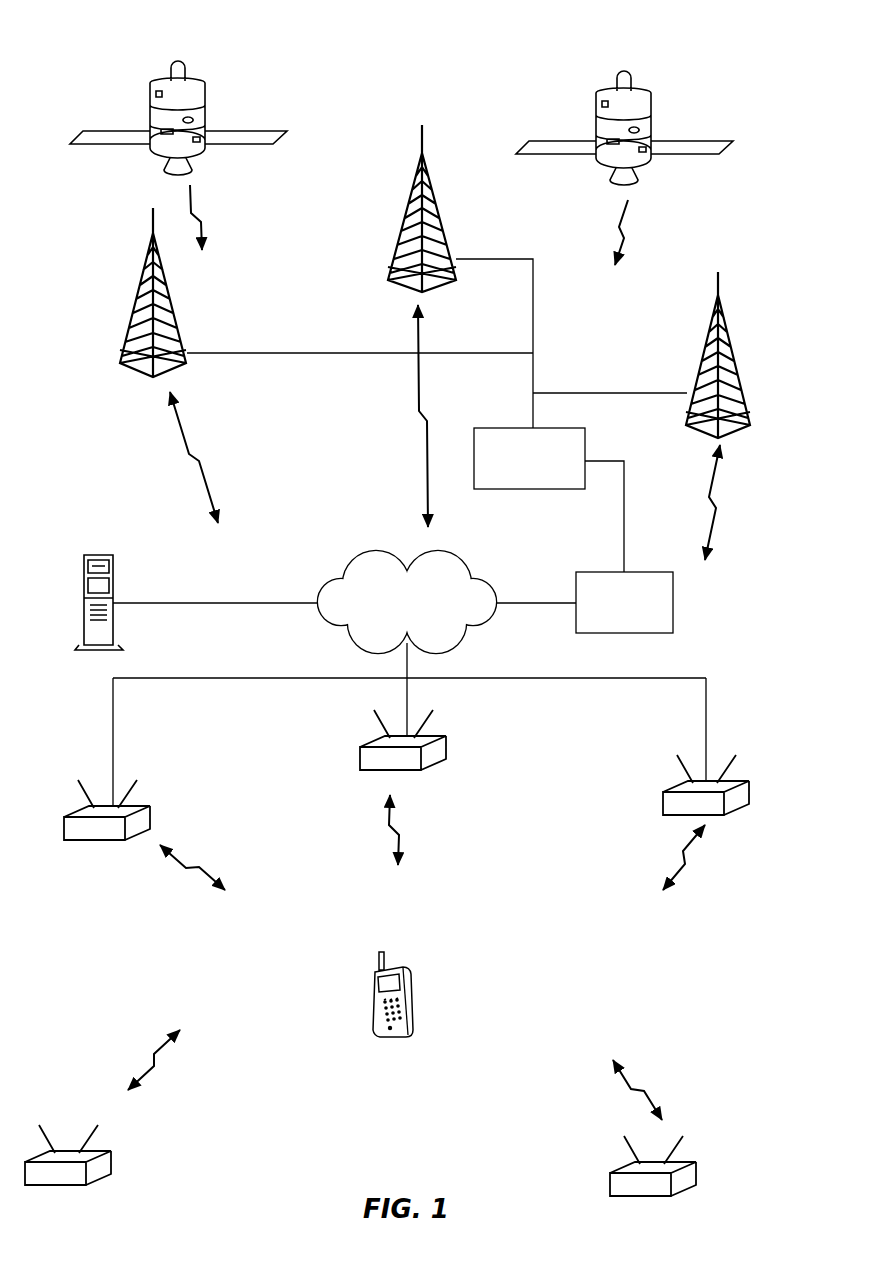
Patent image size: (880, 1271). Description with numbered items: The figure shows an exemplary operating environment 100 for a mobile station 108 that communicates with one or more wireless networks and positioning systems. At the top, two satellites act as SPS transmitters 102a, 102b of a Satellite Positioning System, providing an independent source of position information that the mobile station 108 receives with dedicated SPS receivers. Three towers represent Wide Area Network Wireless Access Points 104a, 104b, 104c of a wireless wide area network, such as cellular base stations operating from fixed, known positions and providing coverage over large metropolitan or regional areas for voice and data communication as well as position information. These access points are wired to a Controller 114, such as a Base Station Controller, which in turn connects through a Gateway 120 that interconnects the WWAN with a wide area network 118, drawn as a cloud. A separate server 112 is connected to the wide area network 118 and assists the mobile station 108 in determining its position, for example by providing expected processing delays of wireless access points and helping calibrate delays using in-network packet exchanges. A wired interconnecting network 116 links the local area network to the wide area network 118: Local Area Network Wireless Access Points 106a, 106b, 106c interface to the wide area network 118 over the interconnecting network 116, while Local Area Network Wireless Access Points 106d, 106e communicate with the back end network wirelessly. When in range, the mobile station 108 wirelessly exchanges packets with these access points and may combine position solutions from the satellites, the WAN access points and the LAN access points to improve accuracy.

The operating environment 100 is at (98, 60).
The SPS transmitter 102a is at (207, 93).
The SPS transmitter 102b is at (653, 104).
The Wide Area Network Wireless Access Point 104a is at (150, 256).
The Wide Area Network Wireless Access Point 104b is at (424, 153).
The Wide Area Network Wireless Access Point 104c is at (730, 341).
The Local Area Network Wireless Access Point 106a is at (150, 807).
The Local Area Network Wireless Access Point 106b is at (427, 736).
The Local Area Network Wireless Access Point 106c is at (663, 801).
The Local Area Network Wireless Access Point 106d is at (111, 1160).
The Local Area Network Wireless Access Point 106e is at (610, 1181).
The mobile station 108 is at (412, 979).
The server 112 is at (114, 566).
The Controller 114 is at (506, 428).
The interconnecting network 116 is at (283, 678).
The wide area network 118 is at (382, 552).
The Gateway 120 is at (607, 572).